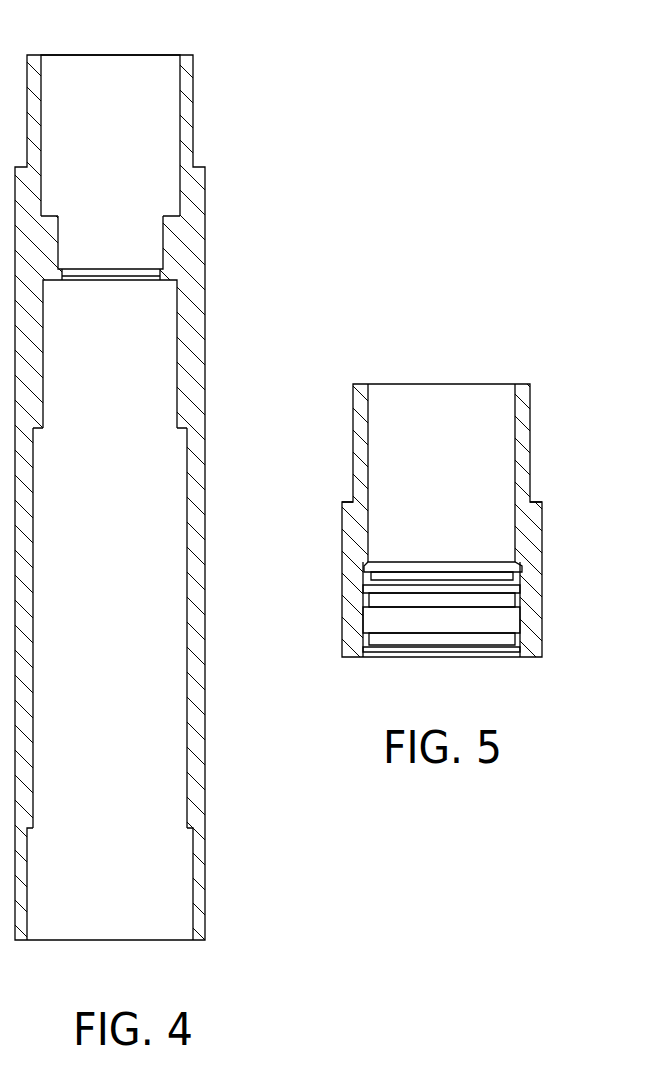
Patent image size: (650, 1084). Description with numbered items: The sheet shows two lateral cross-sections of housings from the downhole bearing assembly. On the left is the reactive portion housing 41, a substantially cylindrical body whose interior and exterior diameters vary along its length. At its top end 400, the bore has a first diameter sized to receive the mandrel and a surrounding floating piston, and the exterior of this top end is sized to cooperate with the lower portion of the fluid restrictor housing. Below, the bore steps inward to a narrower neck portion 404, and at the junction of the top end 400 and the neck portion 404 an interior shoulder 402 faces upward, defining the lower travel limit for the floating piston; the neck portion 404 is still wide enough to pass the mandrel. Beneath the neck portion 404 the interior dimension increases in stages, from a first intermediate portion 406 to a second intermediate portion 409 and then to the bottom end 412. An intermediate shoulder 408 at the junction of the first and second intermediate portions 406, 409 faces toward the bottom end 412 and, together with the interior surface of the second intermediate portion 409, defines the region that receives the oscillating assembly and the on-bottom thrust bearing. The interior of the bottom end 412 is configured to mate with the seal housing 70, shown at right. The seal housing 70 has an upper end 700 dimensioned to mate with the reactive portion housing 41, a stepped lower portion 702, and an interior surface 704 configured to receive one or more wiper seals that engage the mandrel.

In FIG. 4, the reactive portion housing 41 is at (83, 56).
In FIG. 4, the top end 400 is at (180, 114).
In FIG. 4, the interior shoulder 402 is at (170, 215).
In FIG. 4, the neck portion 404 is at (163, 240).
In FIG. 4, the first intermediate portion 406 is at (177, 367).
In FIG. 4, the intermediate shoulder 408 is at (187, 430).
In FIG. 4, the second intermediate portion 409 is at (187, 712).
In FIG. 4, the bottom end 412 is at (192, 908).
In FIG. 5, the seal housing 70 is at (423, 384).
In FIG. 5, the upper end 700 is at (353, 462).
In FIG. 5, the coupling step 702 is at (367, 508).
In FIG. 5, the interior surface 704 is at (393, 623).